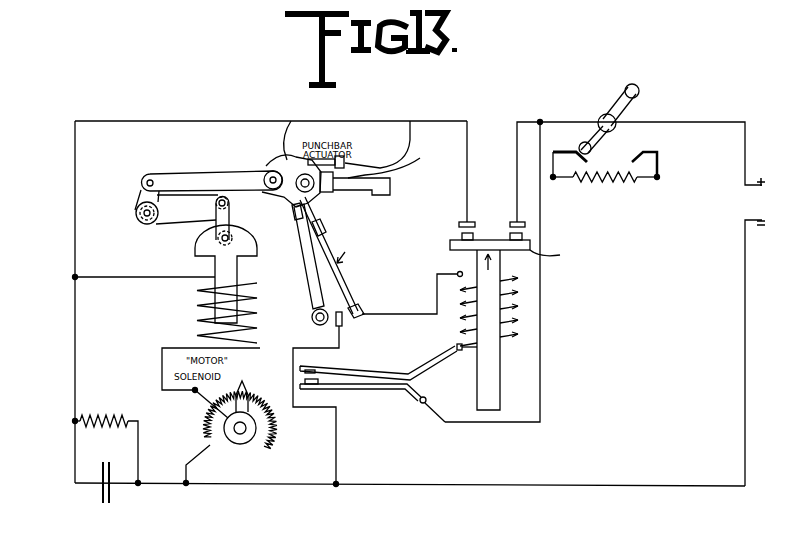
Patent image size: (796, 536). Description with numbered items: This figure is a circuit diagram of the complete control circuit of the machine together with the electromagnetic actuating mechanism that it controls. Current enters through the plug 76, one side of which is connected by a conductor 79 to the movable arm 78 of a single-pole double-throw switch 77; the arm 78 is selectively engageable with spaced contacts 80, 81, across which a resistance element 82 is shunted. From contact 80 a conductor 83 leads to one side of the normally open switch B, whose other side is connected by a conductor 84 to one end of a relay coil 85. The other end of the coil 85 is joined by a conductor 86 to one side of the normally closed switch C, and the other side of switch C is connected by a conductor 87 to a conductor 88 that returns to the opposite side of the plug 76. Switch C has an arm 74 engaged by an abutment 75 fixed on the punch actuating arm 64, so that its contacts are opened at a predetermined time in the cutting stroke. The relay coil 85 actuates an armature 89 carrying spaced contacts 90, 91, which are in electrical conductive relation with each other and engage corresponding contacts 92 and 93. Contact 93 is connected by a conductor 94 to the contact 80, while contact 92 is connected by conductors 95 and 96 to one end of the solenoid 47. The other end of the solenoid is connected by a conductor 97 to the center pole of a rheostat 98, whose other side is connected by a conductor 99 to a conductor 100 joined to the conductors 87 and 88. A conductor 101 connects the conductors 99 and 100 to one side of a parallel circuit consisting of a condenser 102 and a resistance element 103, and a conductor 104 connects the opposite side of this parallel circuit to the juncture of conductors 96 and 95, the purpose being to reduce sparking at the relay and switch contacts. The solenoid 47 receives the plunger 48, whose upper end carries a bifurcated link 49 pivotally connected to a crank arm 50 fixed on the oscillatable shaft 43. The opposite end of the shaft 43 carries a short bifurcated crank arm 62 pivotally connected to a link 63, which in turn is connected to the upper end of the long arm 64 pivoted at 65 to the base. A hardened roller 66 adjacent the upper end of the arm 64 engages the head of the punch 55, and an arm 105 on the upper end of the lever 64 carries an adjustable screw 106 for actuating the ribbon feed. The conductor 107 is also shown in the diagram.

The oscillatable shaft 43 is at (142, 222).
The solenoid 47 is at (262, 300).
The plunger 48 is at (214, 260).
The bifurcated link 49 is at (231, 220).
The crank arm 50 is at (186, 224).
The punch 55 is at (358, 182).
The bifurcated crank arm 62 is at (136, 194).
The link 63 is at (202, 178).
The punch actuating arm 64 is at (304, 266).
The pivot 65 is at (311, 320).
The hardened roller 66 is at (288, 179).
The switch arm 74 is at (314, 213).
The abutment 75 is at (284, 220).
The plug 76 is at (728, 332).
The single-pole double-throw switch 77 is at (582, 214).
The movable switch arm 78 is at (600, 119).
The conductor 79 is at (715, 122).
The switch contact 80 is at (586, 150).
The switch contact 81 is at (626, 143).
The resistance element 82 is at (636, 181).
The conductor 83 is at (542, 285).
The conductor 84 is at (424, 380).
The relay coil 85 is at (518, 310).
The conductor 86 is at (411, 312).
The conductor 87 is at (337, 438).
The conductor 88 is at (474, 484).
The armature 89 is at (493, 379).
The relay contact 90 is at (450, 254).
The relay contact 91 is at (552, 257).
The relay contact 92 is at (473, 174).
The relay contact 93 is at (510, 222).
The conductor 94 is at (517, 163).
The conductor 95 is at (272, 121).
The conductor 96 is at (127, 283).
The conductor 97 is at (184, 398).
The rheostat 98 is at (270, 434).
The conductor 99 is at (183, 465).
The conductor 100 is at (224, 485).
The conductor 101 is at (165, 485).
The condenser 102 is at (100, 491).
The resistance element 103 is at (104, 402).
The conductor 104 is at (75, 356).
The arm 105 is at (297, 130).
The adjustable screw 106 is at (418, 122).
The conductor 107 is at (397, 166).